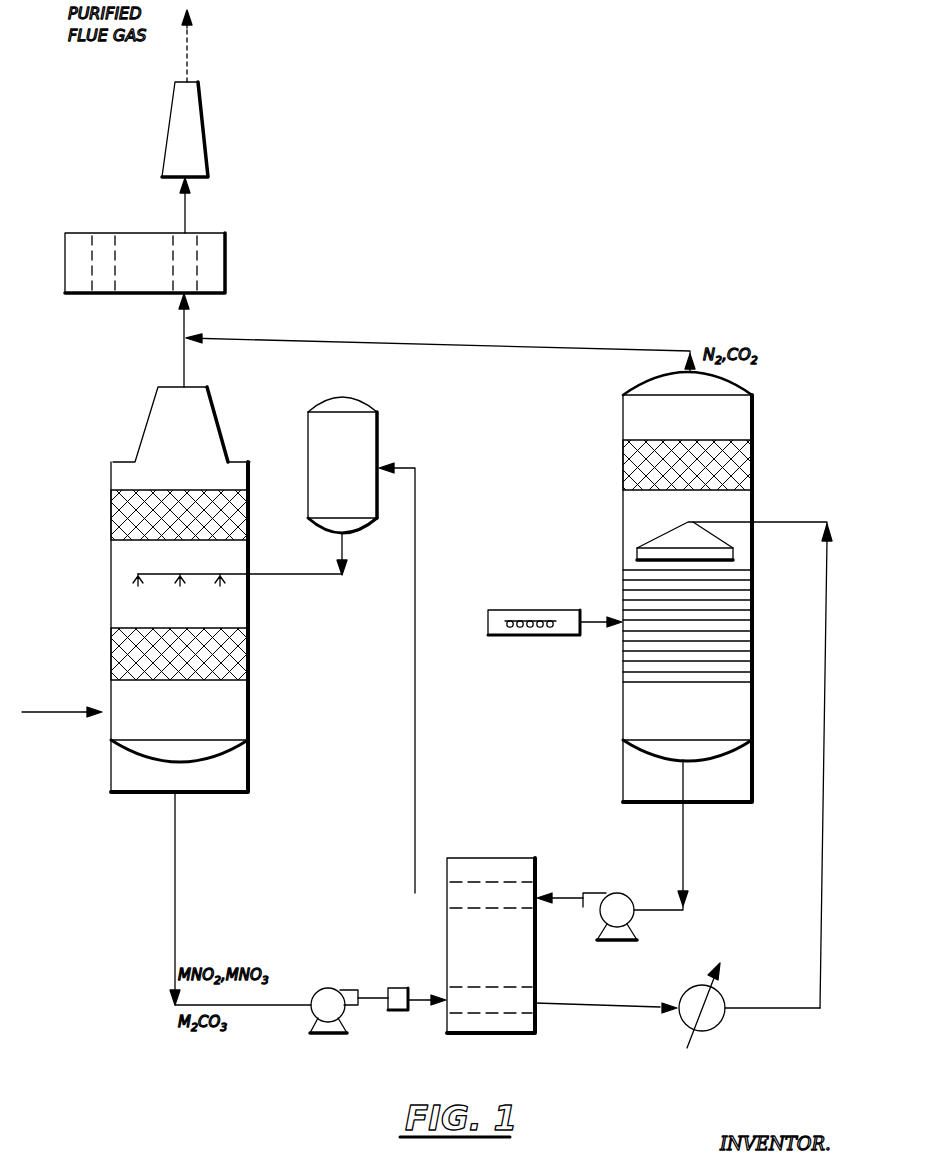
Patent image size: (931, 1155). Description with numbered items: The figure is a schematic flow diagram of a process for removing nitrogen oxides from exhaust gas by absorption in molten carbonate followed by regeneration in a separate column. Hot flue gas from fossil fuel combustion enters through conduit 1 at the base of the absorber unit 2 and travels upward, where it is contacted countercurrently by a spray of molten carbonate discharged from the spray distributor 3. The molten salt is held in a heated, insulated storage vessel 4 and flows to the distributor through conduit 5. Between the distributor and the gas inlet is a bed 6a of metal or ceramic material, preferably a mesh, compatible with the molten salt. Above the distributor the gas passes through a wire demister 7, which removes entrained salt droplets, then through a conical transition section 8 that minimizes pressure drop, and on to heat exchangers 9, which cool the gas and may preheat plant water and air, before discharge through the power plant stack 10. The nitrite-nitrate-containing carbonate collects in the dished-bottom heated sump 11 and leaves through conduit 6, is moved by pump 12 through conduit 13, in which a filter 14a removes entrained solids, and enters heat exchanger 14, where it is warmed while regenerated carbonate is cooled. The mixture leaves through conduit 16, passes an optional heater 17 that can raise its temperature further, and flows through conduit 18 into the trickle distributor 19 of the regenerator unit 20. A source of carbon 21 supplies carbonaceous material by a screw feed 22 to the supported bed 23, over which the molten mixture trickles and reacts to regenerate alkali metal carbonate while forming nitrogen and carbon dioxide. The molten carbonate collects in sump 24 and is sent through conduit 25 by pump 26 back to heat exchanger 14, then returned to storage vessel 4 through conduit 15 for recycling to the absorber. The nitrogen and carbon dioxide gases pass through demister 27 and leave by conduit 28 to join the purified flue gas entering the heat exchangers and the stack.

The conduit 1 is at (85, 720).
The absorber unit 2 is at (265, 664).
The spray distributor 3 is at (138, 577).
The storage vessel 4 is at (372, 430).
The conduit 5 is at (345, 548).
The conduit 6 is at (177, 856).
The bed 6a is at (236, 648).
The wire demister 7 is at (120, 520).
The conical transition section 8 is at (160, 418).
The heat exchangers 9 is at (225, 264).
The power plant stack 10 is at (198, 106).
The sump 11 is at (200, 748).
The pump 12 is at (328, 1036).
The conduit 13 is at (370, 992).
The heat exchanger 14 is at (516, 1034).
The filter 14a is at (400, 986).
The conduit 15 is at (417, 744).
The conduit 16 is at (646, 1009).
The heater 17 is at (722, 1027).
The conduit 18 is at (825, 672).
The trickle distributor 19 is at (660, 540).
The regenerator unit 20 is at (606, 562).
The source of carbon 21 is at (538, 637).
The screw feed 22 is at (590, 626).
The supported bed 23 is at (636, 587).
The sump 24 is at (662, 748).
The conduit 25 is at (685, 868).
The pump 26 is at (628, 940).
The demister 27 is at (740, 465).
The conduit 28 is at (440, 340).